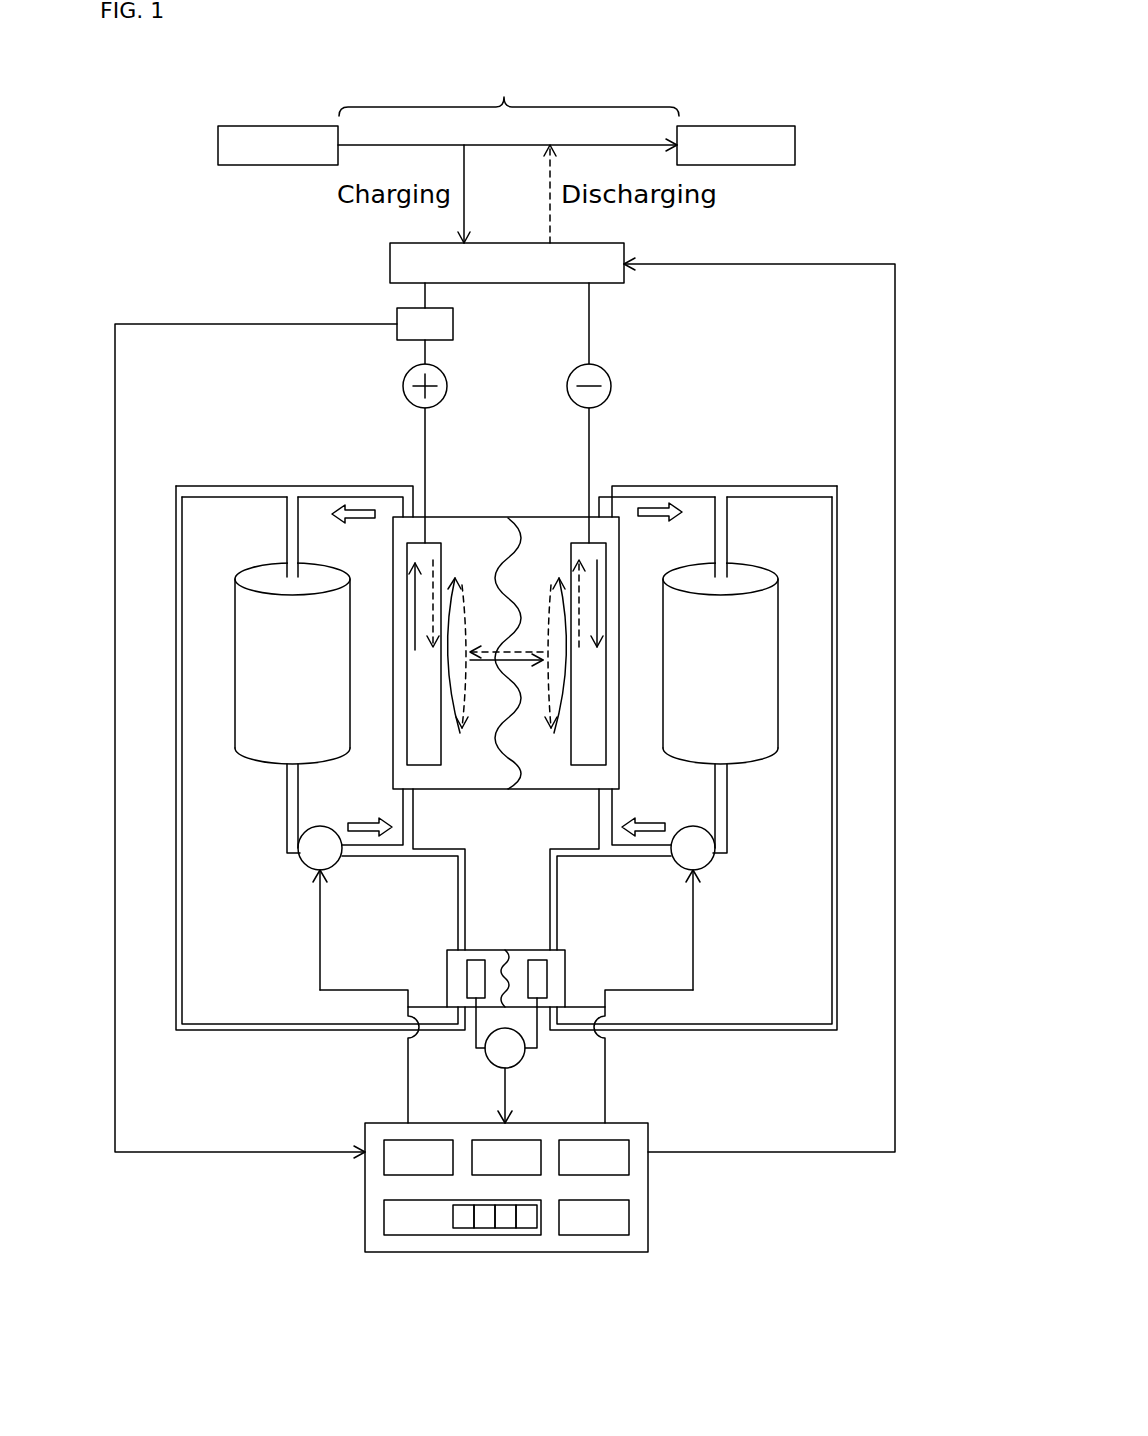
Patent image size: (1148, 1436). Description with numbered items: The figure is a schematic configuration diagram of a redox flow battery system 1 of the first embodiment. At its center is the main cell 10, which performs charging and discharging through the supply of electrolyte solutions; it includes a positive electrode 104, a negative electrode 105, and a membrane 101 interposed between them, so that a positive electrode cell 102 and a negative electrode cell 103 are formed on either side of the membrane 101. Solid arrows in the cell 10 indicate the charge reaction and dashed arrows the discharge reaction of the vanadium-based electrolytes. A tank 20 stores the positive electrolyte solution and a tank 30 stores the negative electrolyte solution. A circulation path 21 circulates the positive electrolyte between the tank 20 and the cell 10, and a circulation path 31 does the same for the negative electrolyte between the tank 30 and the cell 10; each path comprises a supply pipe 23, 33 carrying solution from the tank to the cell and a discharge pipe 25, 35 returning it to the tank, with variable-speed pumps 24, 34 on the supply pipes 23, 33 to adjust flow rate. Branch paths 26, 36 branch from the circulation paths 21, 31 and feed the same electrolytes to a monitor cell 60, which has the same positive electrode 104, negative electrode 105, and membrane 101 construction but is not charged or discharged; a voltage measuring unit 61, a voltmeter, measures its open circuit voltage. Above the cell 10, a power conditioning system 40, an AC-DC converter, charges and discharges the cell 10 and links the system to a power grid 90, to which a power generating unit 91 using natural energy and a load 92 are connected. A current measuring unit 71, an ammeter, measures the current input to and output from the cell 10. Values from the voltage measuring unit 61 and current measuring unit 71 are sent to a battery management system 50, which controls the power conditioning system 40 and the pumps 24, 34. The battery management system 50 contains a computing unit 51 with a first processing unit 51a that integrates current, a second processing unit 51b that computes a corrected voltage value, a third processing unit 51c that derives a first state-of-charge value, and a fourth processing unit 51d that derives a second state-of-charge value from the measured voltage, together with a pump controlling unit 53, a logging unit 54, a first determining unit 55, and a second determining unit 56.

The RF battery system 1 is at (808, 234).
The cell 10 is at (500, 513).
The tank 20 is at (249, 572).
The circulation path 21 is at (280, 802).
The supply pipe 23 is at (384, 856).
The pump 24 is at (300, 864).
The discharge pipe 25 is at (317, 492).
The branch path 26 is at (263, 1034).
The tank 30 is at (749, 572).
The circulation path 31 is at (733, 802).
The supply pipe 33 is at (618, 855).
The pump 34 is at (704, 860).
The discharge pipe 35 is at (699, 492).
The branch path 36 is at (750, 1034).
The power conditioning system 40 is at (428, 244).
The battery management system 50 is at (652, 1199).
The computing unit 51 is at (482, 1255).
The first processing unit 51a is at (461, 1233).
The second processing unit 51b is at (483, 1233).
The third processing unit 51c is at (502, 1233).
The fourth processing unit 51d is at (523, 1233).
The pump controlling unit 53 is at (594, 1217).
The logging unit 54 is at (418, 1157).
The first determining unit 55 is at (506, 1157).
The second determining unit 56 is at (594, 1157).
The monitor cell 60 is at (501, 943).
The voltage measuring unit 61 is at (522, 1057).
The current measuring unit 71 is at (402, 310).
The power grid 90 is at (508, 107).
The power generating unit 91 is at (290, 125).
The load 92 is at (736, 125).
The membrane 101 is at (508, 780).
The positive electrode cell 102 is at (452, 785).
The negative electrode cell 103 is at (556, 785).
The positive electrode 104 is at (410, 752).
The negative electrode 105 is at (603, 752).